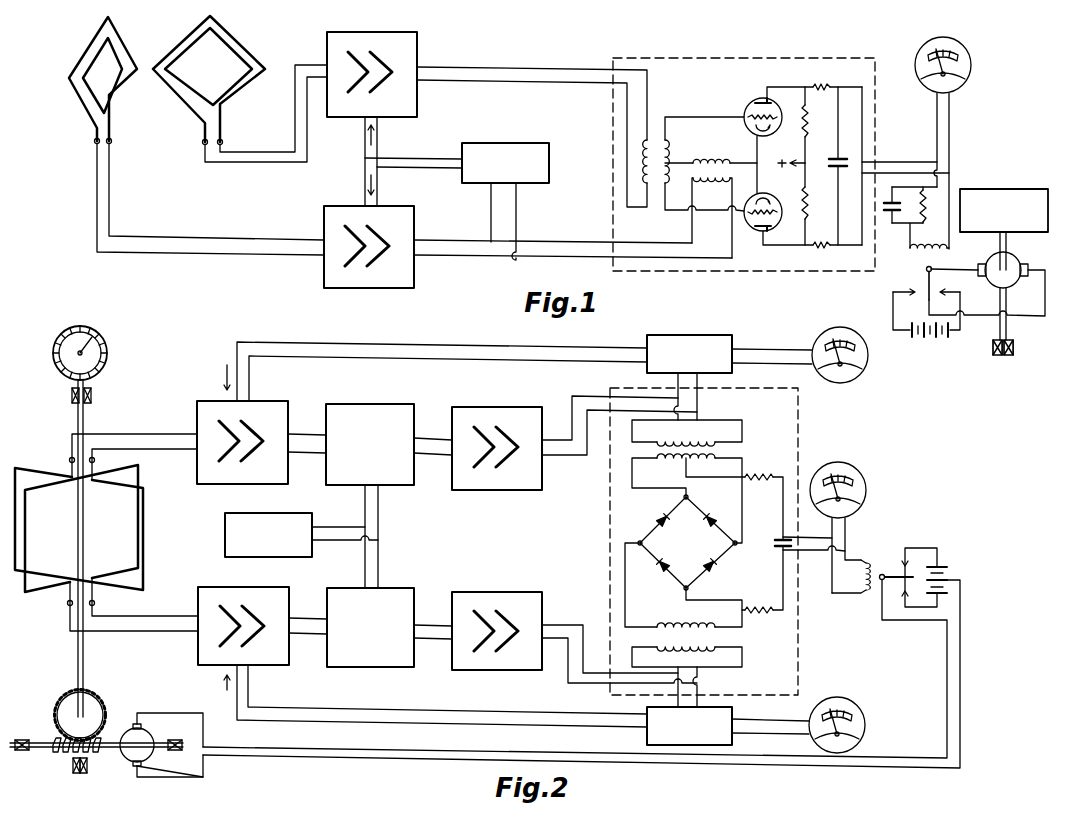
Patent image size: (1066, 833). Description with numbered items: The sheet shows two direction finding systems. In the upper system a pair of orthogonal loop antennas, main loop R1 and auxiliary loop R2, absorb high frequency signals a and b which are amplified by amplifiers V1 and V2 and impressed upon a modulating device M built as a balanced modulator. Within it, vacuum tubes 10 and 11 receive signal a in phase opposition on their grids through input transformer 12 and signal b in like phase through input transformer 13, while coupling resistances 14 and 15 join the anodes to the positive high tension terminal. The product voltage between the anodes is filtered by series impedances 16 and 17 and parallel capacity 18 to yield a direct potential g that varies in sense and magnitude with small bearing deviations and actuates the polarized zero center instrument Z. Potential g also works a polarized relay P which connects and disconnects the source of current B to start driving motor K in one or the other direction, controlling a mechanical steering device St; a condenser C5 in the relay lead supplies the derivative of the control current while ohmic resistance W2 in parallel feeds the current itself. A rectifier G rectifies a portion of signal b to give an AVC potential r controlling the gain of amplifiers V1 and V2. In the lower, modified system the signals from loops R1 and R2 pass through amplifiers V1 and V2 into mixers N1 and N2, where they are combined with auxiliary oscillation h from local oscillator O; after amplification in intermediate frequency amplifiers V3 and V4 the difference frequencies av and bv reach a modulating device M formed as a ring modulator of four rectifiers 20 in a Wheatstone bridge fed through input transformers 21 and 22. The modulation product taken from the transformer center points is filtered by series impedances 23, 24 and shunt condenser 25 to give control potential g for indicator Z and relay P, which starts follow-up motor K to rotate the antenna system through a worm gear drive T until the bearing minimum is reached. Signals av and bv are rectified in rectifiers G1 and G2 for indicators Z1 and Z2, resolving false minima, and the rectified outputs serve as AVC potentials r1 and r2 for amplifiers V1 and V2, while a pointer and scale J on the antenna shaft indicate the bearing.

In FIG. 1, the main loop antenna R1 is at (240, 89).
In FIG. 2, the main loop antenna R1 is at (30, 468).
In FIG. 1, the auxiliary loop antenna R2 is at (196, 136).
In FIG. 2, the auxiliary loop antenna R2 is at (140, 474).
In FIG. 1, the amplifier V1 is at (410, 60).
In FIG. 2, the amplifier V1 is at (268, 408).
In FIG. 1, the amplifier V2 is at (410, 241).
In FIG. 2, the amplifier V2 is at (277, 664).
In FIG. 2, the intermediate frequency amplifier V3 is at (512, 412).
In FIG. 2, the intermediate frequency amplifier V4 is at (516, 597).
In FIG. 1, the rectifier G is at (505, 201).
In FIG. 2, the rectifier G1 is at (689, 377).
In FIG. 2, the rectifier G2 is at (689, 706).
In FIG. 1, the high frequency signal a is at (500, 73).
In FIG. 2, the high frequency signal a is at (300, 440).
In FIG. 1, the high frequency signal b is at (565, 254).
In FIG. 2, the high frequency signal b is at (318, 628).
In FIG. 1, the AVC potential r is at (404, 160).
In FIG. 2, the AVC potential r1 is at (327, 328).
In FIG. 2, the AVC potential r2 is at (286, 716).
In FIG. 1, the modulating device M is at (760, 271).
In FIG. 2, the modulating device M is at (610, 498).
In FIG. 1, the vacuum tube 10 is at (778, 108).
In FIG. 1, the vacuum tube 11 is at (775, 228).
In FIG. 1, the input transformer 12 is at (671, 147).
In FIG. 1, the input transformer 13 is at (708, 160).
In FIG. 1, the coupling resistance 14 is at (810, 132).
In FIG. 1, the coupling resistance 15 is at (810, 210).
In FIG. 1, the series impedance 16 is at (818, 91).
In FIG. 1, the series impedance 17 is at (820, 242).
In FIG. 1, the parallel capacity 18 is at (834, 169).
In FIG. 1, the direct control potential g is at (903, 170).
In FIG. 2, the direct control potential g is at (822, 549).
In FIG. 1, the polarized direct current instrument Z is at (968, 70).
In FIG. 2, the polarized direct current instrument Z is at (855, 477).
In FIG. 2, the indicator Z1 is at (813, 338).
In FIG. 2, the indicator Z2 is at (847, 707).
In FIG. 1, the condenser C5 is at (890, 222).
In FIG. 1, the ohmic resistance W2 is at (927, 223).
In FIG. 1, the steering device St is at (1004, 210).
In FIG. 1, the driving motor K is at (1010, 286).
In FIG. 2, the driving motor K is at (148, 736).
In FIG. 1, the polarized relay P is at (926, 270).
In FIG. 2, the polarized relay P is at (869, 561).
In FIG. 1, the source of current B is at (915, 338).
In FIG. 2, the source of current B is at (950, 557).
In FIG. 2, the scale with pointer J is at (97, 357).
In FIG. 2, the mixer N1 is at (370, 444).
In FIG. 2, the mixer N2 is at (370, 627).
In FIG. 2, the local oscillator O is at (301, 535).
In FIG. 2, the difference frequency signal av is at (428, 444).
In FIG. 2, the difference frequency signal bv is at (442, 630).
In FIG. 2, the auxiliary oscillation h is at (374, 514).
In FIG. 2, the rectifiers 20 is at (704, 526).
In FIG. 2, the input transformer 21 is at (715, 450).
In FIG. 2, the input transformer 22 is at (715, 633).
In FIG. 2, the series impedance 23 is at (762, 482).
In FIG. 2, the series impedance 24 is at (762, 610).
In FIG. 2, the shunt condenser 25 is at (774, 547).
In FIG. 2, the worm gear drive T is at (62, 738).